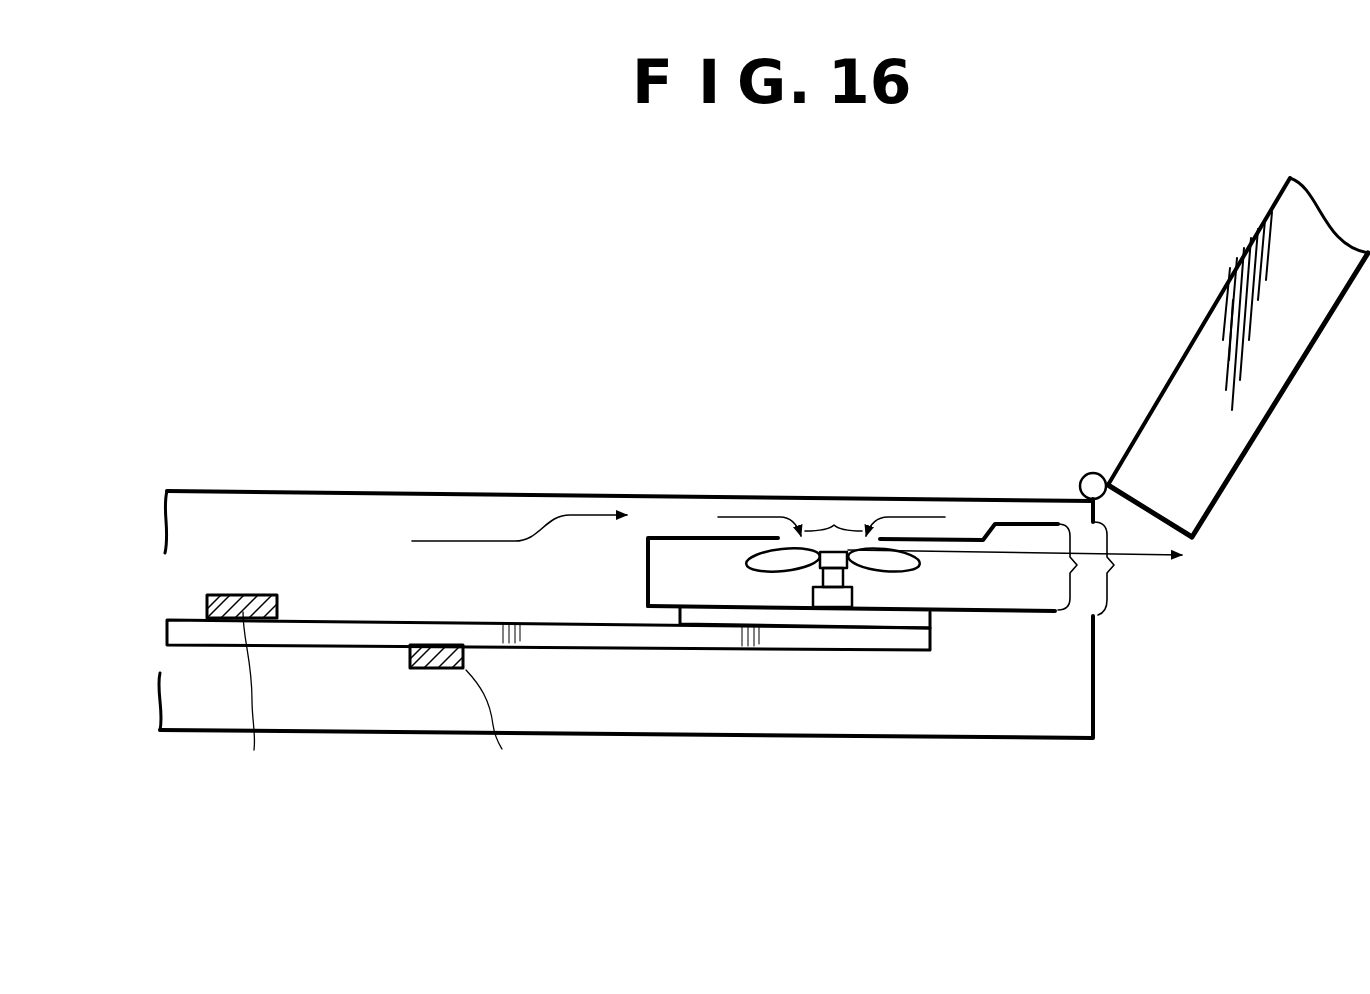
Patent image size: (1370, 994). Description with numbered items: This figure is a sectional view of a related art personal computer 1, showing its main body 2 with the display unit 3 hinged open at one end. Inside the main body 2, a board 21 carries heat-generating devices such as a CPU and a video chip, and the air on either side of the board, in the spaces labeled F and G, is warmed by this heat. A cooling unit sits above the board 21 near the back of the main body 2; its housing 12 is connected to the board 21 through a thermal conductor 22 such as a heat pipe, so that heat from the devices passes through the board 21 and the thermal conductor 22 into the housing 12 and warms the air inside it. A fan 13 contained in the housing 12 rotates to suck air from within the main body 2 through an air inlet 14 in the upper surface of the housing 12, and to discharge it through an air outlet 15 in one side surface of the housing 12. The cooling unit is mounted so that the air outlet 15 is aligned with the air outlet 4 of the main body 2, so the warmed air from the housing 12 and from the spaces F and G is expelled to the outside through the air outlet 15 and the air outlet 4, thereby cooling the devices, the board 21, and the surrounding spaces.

The personal computer 1 is at (755, 897).
The main body 2 is at (989, 740).
The display unit 3 is at (1195, 345).
The air outlet 4 is at (1113, 568).
The housing 12 is at (677, 537).
The fan 13 is at (896, 560).
The air inlet 14 is at (834, 525).
The air outlet 15 is at (1080, 567).
The board 21 is at (612, 627).
The thermal conductor 22 is at (789, 617).